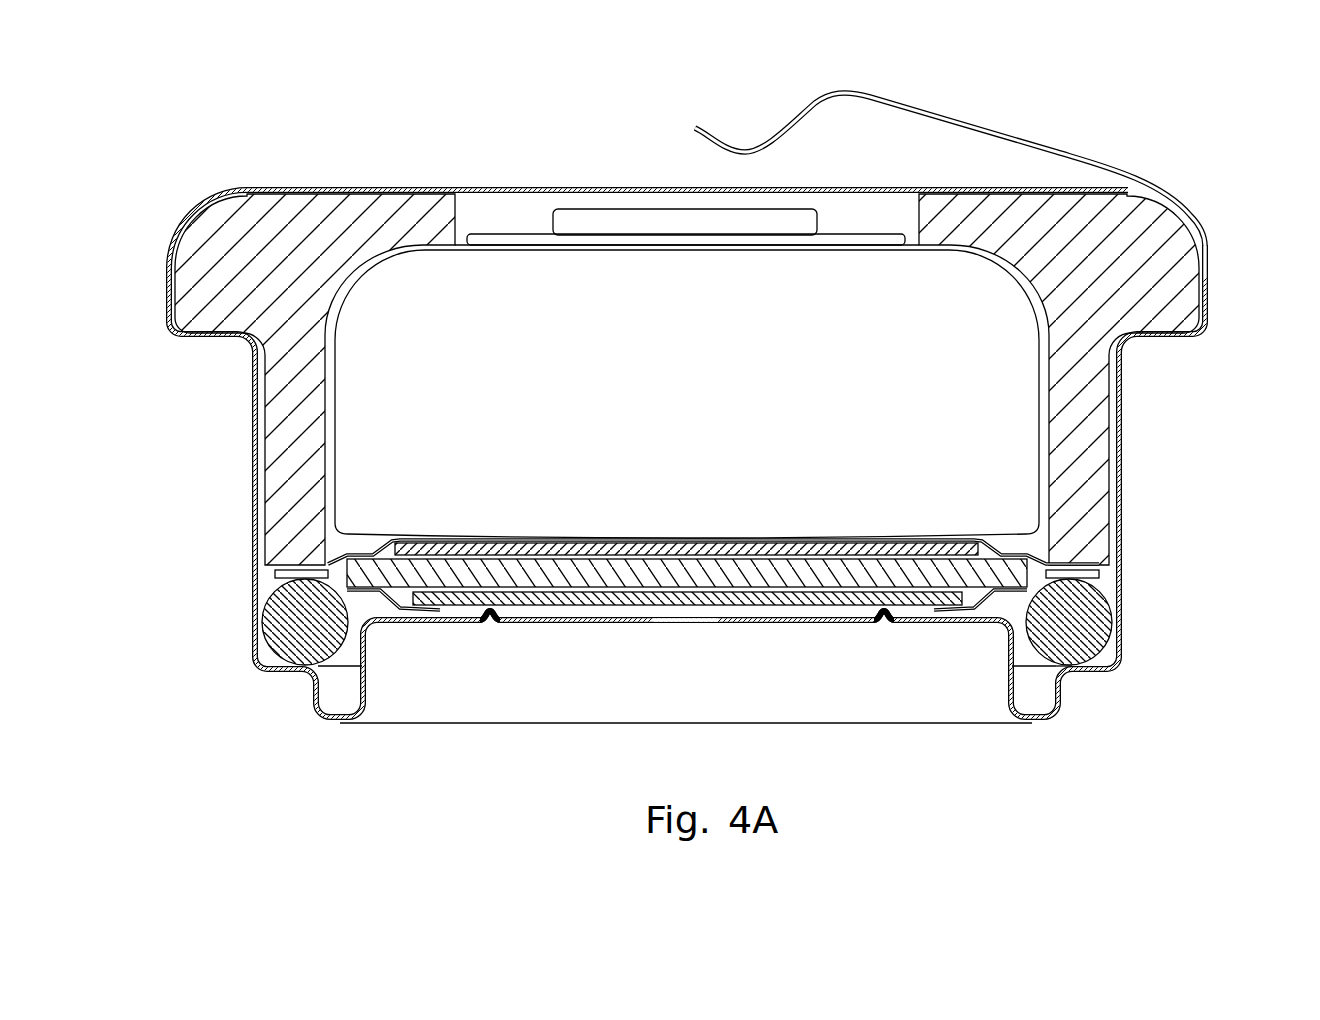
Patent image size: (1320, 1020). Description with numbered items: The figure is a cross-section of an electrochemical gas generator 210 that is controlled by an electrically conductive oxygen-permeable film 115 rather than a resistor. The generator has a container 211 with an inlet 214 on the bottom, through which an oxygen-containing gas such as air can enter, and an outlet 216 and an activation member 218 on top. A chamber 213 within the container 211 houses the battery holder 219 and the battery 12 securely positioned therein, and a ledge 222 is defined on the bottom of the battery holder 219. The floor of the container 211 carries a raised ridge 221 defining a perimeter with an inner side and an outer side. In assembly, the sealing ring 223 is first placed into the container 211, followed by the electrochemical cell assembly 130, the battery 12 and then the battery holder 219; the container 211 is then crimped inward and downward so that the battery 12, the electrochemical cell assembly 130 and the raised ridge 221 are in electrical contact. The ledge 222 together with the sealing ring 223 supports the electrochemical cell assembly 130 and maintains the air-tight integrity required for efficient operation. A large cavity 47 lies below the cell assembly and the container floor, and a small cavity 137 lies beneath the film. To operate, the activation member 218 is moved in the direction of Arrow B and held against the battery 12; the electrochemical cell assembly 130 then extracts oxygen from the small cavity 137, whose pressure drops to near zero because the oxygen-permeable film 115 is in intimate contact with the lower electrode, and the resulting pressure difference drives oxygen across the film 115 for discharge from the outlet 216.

The electrochemical gas generator 210 is at (440, 143).
The container 211 is at (1207, 312).
The chamber 213 is at (1043, 411).
The inlet 214 is at (693, 625).
The outlet 216 is at (663, 185).
The activation member 218 is at (975, 120).
The battery holder 219 is at (315, 222).
The raised ridge 221 is at (495, 617).
The ledge 222 is at (295, 563).
The sealing ring 223 is at (258, 577).
The battery 12 is at (708, 400).
The electrochemical cell assembly 130 is at (1104, 579).
The oxygen-permeable film 115 is at (918, 603).
The large cavity 47 is at (1110, 617).
The small cavity 137 is at (1083, 667).